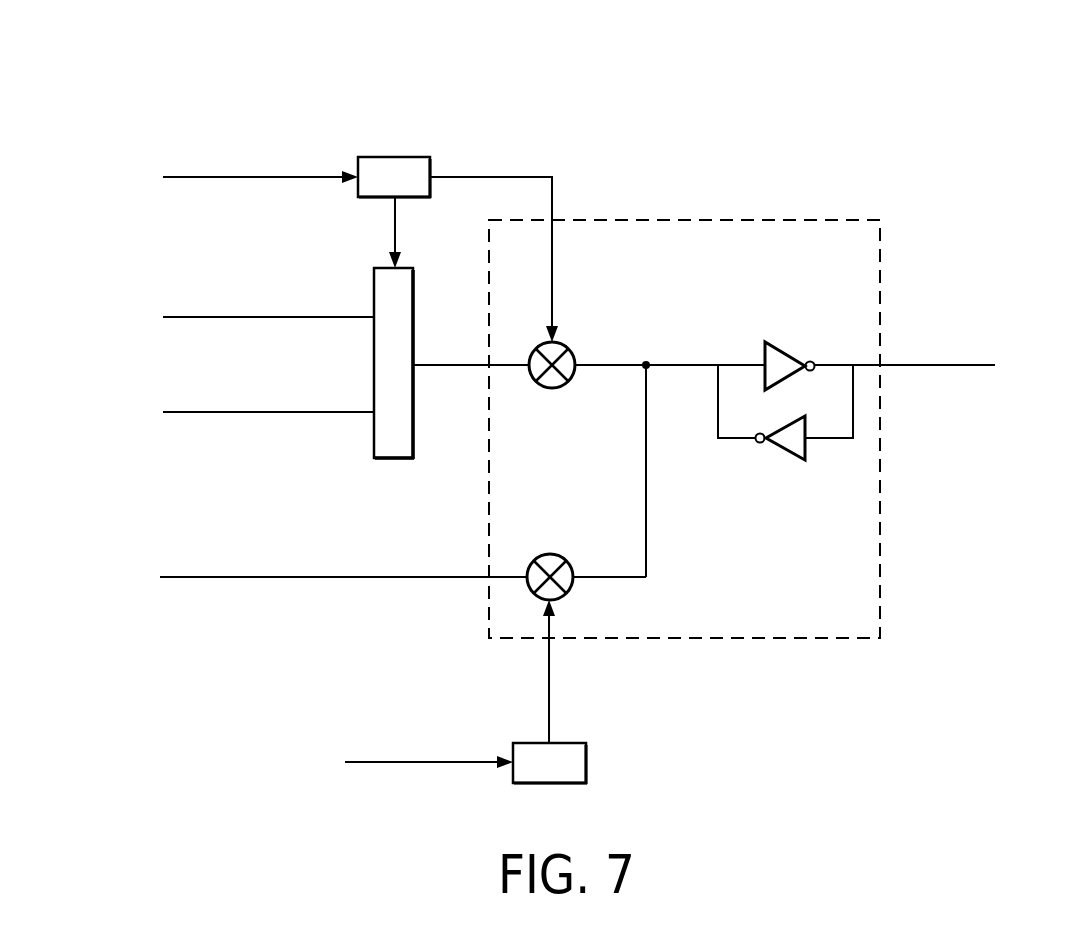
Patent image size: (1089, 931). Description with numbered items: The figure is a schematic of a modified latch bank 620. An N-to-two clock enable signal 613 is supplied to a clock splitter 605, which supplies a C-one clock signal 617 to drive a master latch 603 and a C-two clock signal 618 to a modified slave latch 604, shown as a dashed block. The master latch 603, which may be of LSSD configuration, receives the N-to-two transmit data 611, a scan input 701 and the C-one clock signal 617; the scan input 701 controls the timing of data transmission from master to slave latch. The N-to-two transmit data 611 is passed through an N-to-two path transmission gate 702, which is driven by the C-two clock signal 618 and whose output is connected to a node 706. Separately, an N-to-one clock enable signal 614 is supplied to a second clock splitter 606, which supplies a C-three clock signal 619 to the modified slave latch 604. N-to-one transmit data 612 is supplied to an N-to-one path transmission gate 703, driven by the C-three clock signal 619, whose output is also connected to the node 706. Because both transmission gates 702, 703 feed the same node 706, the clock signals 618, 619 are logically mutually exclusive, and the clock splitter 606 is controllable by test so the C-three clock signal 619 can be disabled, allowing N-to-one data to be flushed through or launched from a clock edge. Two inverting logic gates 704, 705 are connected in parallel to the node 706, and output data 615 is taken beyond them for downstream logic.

The N:2 clock enable signal 613 is at (307, 178).
The clock splitter 605 is at (396, 157).
The C1 clock signal 617 is at (396, 236).
The C2 clock signal 618 is at (553, 259).
The modified slave latch 604 is at (778, 220).
The modified latch bank 620 is at (972, 84).
The N:2 transmit data 611 is at (315, 318).
The scan input 701 is at (315, 413).
The master latch 603 is at (397, 459).
The N:2 path transmission gate 702 is at (552, 389).
The node 706 is at (646, 364).
The inverting logic gate 704 is at (783, 348).
The inverting logic gate 705 is at (784, 458).
The output data 615 is at (930, 367).
The N:1 path transmission gate 703 is at (549, 554).
The N:1 transmit data 612 is at (415, 578).
The N:1 clock enable signal 614 is at (460, 763).
The C3 clock signal 619 is at (550, 714).
The clock splitter 606 is at (588, 765).